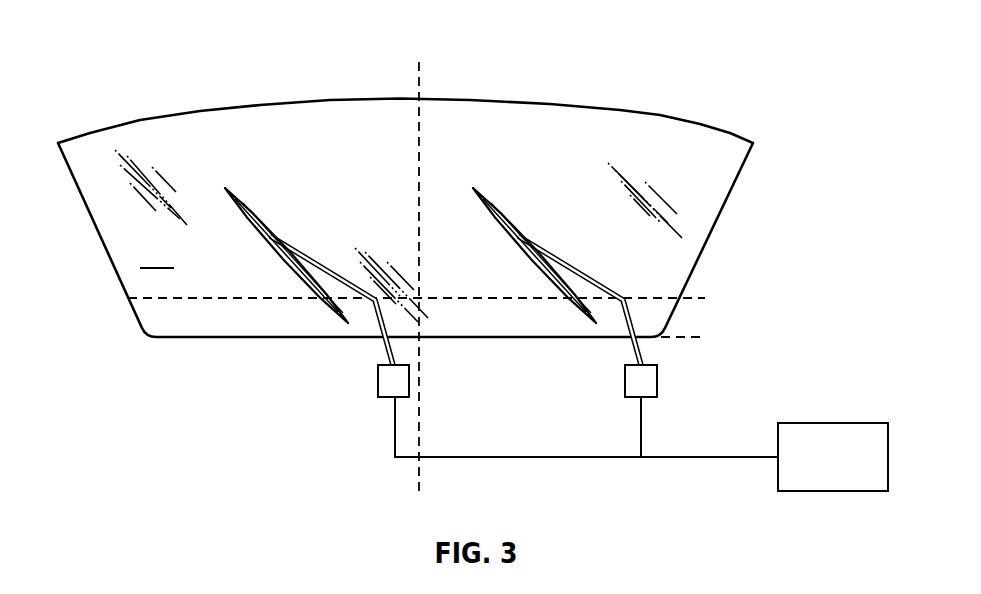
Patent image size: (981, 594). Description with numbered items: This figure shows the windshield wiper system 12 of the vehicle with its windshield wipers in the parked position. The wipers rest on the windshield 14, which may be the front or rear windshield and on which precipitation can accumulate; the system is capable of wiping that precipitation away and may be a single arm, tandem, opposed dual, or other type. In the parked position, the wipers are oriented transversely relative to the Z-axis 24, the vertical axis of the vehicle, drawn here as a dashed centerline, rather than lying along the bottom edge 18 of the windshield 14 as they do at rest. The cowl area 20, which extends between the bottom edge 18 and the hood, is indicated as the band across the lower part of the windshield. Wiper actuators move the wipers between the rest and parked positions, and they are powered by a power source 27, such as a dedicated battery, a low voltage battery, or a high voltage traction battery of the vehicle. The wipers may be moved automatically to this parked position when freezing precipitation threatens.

The windshield wiper system 12 is at (134, 58).
The windshield 14 is at (543, 122).
The bottom edge 18 is at (410, 280).
The cowl area 20 is at (700, 298).
The Z-axis 24 is at (419, 80).
The power sources 27 is at (852, 423).